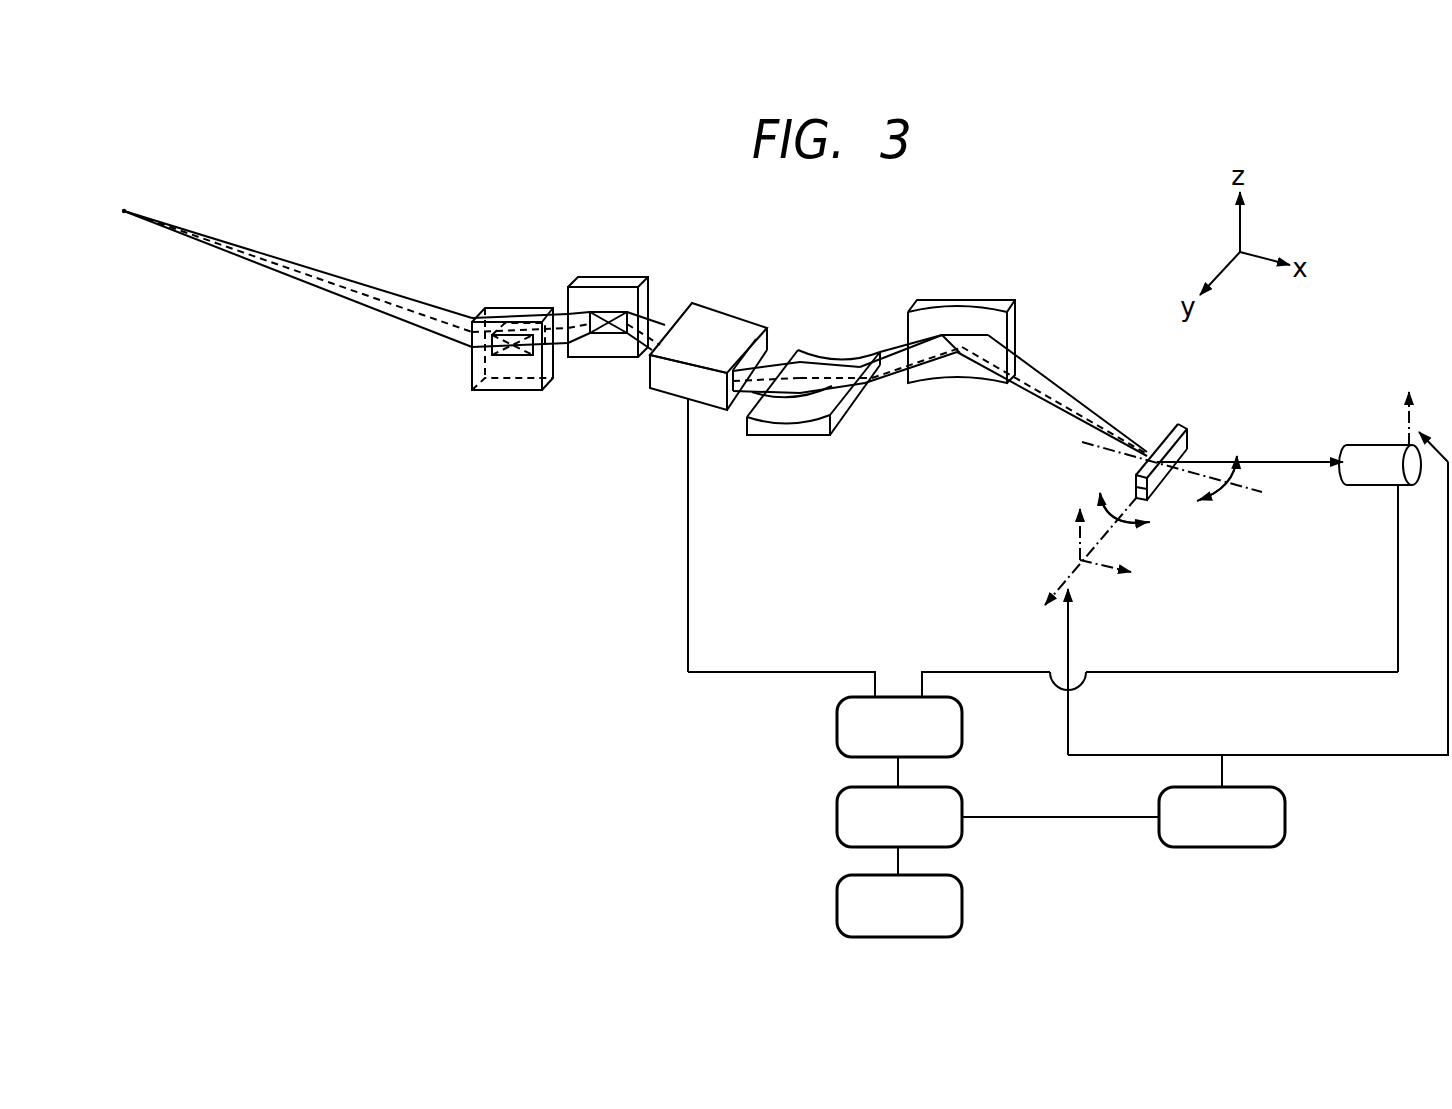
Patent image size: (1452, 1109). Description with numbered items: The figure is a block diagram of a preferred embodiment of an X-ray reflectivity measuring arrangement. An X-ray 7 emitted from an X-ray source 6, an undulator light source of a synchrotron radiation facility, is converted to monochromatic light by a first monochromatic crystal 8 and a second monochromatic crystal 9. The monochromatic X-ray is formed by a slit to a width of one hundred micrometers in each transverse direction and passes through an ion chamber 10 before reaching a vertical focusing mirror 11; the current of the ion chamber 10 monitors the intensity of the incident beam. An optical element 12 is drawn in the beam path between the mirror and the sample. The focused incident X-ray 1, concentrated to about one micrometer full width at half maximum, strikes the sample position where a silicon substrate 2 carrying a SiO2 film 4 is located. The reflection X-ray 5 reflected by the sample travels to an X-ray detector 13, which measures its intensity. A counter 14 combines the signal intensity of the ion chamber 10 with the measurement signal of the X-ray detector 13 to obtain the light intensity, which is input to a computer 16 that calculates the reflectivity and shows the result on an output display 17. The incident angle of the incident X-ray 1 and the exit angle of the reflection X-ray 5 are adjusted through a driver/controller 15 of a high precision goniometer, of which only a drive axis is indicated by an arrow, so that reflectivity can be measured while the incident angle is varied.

The incident X-ray 1 is at (1073, 398).
The silicon substrate 2 is at (1187, 445).
The SiO2 film 4 is at (1178, 424).
The reflection X-ray 5 is at (1305, 462).
The X-ray source 6 is at (124, 211).
The X-ray 7 is at (348, 280).
The first monochromatic crystal 8 is at (523, 308).
The second monochromatic crystal 9 is at (615, 277).
The ion chamber 10 is at (734, 317).
The vertical focusing mirror 11 is at (832, 356).
The cylindrical lens 12 is at (972, 300).
The X-ray detector 13 is at (1362, 484).
The counter 14 is at (837, 722).
The driver/controller 15 is at (1285, 816).
The computer 16 is at (837, 812).
The output display 17 is at (837, 906).